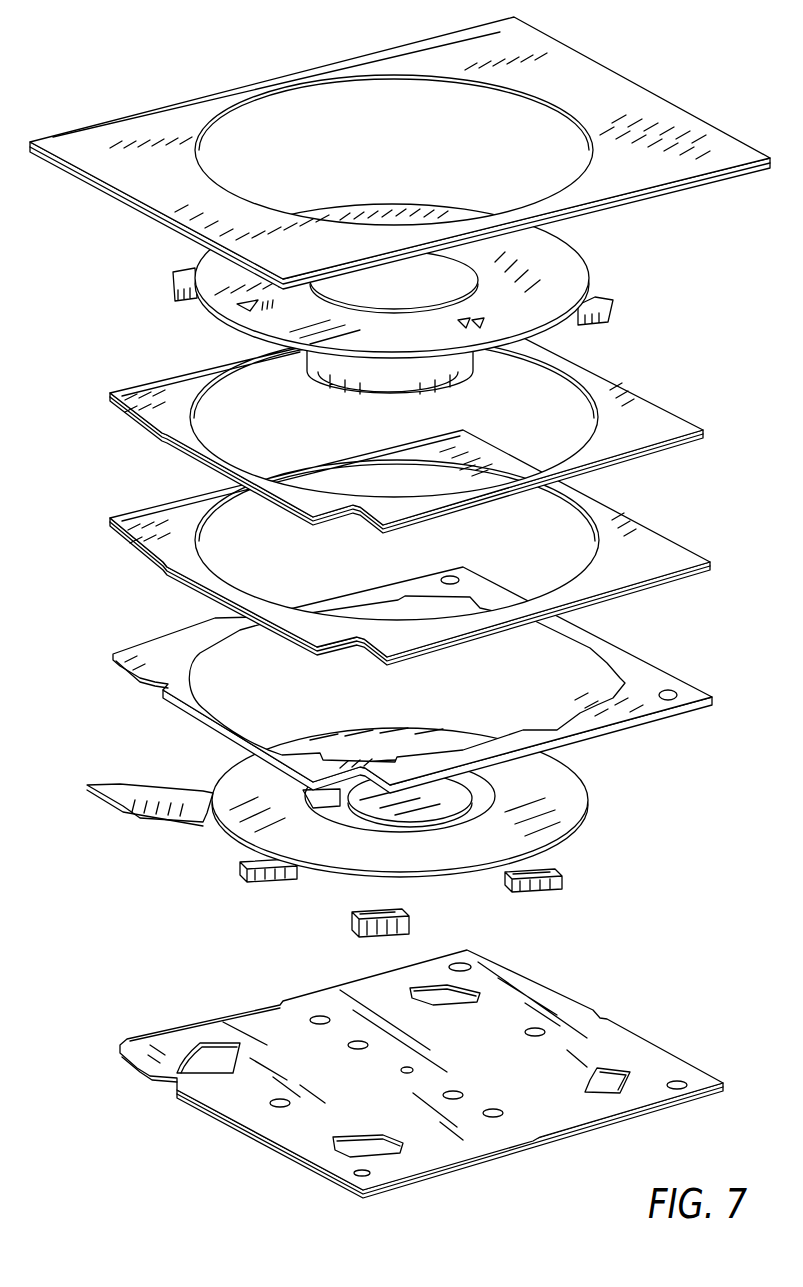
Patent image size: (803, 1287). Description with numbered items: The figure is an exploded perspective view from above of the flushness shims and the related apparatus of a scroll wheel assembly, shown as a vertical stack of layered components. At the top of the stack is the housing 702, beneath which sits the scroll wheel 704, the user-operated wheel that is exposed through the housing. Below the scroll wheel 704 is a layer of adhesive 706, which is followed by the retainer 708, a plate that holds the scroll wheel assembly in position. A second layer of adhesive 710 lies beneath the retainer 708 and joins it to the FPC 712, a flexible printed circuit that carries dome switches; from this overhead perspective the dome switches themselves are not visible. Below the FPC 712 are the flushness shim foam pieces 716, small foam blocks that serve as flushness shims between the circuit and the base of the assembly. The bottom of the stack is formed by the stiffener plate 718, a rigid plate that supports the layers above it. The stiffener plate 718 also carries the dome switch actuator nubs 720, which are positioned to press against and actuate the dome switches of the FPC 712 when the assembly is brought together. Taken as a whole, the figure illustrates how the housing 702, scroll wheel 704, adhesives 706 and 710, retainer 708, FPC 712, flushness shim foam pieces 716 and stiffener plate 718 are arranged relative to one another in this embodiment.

The housing 702 is at (682, 101).
The scroll wheel 704 is at (595, 303).
The adhesive 706 is at (653, 423).
The retainer 708 is at (667, 552).
The adhesive 710 is at (655, 678).
The FPC 712 is at (577, 797).
The flushness shim foam pieces 716 is at (565, 887).
The stiffener plate 718 is at (643, 1058).
The dome switch actuator nubs 720 is at (273, 1107).